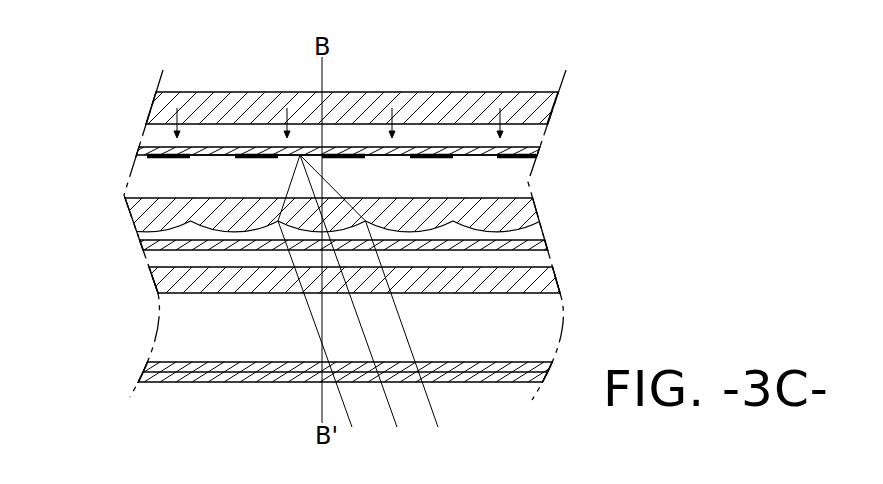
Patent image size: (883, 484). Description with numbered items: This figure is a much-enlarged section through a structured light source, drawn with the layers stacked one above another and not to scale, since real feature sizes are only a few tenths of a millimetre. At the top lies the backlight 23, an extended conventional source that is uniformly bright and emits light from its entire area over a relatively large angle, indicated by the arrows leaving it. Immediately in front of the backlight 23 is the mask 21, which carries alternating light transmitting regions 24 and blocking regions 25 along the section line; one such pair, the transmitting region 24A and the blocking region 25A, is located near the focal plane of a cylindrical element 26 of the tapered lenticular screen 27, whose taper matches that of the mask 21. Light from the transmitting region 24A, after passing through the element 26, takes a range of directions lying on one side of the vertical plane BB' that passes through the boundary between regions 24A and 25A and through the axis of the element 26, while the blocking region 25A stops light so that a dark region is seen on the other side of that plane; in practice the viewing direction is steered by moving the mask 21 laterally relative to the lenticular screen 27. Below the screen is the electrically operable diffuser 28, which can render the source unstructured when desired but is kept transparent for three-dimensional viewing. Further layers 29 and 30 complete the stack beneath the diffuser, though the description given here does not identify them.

The mask 21 is at (537, 153).
The backlight 23 is at (492, 102).
The light transmitting regions 24 is at (388, 157).
The light transmitting region 24A is at (300, 155).
The blocking regions 25 is at (250, 158).
The blocking region 25A is at (356, 152).
The cylindrical element 26 is at (280, 221).
The tapered lenticular screen 27 is at (142, 218).
The electrically operable diffuser 28 is at (548, 246).
The glass substrate 29 is at (545, 280).
The display panel 30 is at (478, 373).